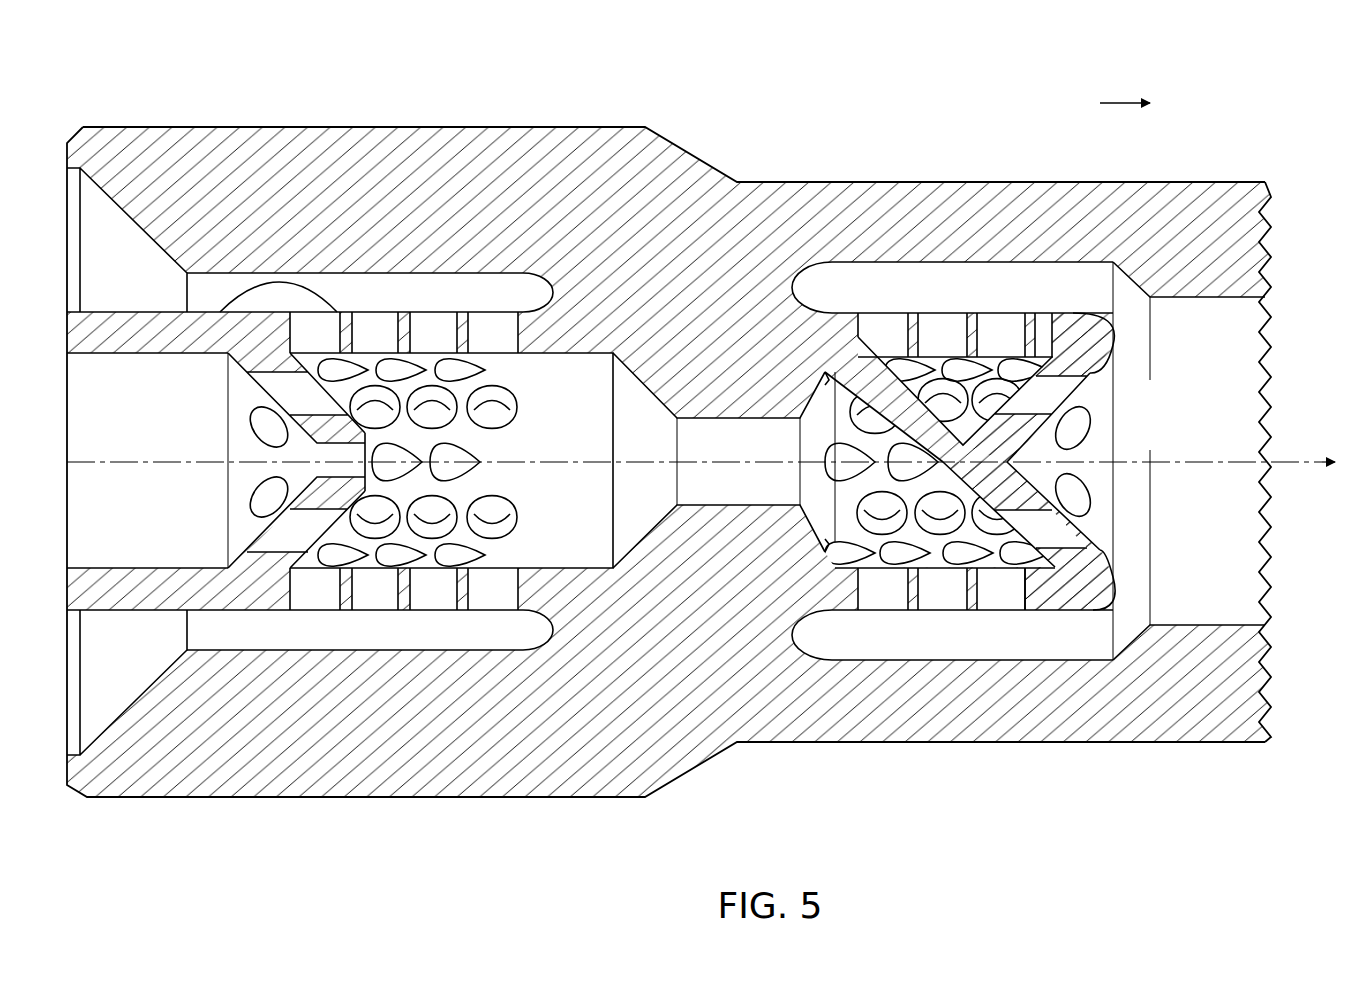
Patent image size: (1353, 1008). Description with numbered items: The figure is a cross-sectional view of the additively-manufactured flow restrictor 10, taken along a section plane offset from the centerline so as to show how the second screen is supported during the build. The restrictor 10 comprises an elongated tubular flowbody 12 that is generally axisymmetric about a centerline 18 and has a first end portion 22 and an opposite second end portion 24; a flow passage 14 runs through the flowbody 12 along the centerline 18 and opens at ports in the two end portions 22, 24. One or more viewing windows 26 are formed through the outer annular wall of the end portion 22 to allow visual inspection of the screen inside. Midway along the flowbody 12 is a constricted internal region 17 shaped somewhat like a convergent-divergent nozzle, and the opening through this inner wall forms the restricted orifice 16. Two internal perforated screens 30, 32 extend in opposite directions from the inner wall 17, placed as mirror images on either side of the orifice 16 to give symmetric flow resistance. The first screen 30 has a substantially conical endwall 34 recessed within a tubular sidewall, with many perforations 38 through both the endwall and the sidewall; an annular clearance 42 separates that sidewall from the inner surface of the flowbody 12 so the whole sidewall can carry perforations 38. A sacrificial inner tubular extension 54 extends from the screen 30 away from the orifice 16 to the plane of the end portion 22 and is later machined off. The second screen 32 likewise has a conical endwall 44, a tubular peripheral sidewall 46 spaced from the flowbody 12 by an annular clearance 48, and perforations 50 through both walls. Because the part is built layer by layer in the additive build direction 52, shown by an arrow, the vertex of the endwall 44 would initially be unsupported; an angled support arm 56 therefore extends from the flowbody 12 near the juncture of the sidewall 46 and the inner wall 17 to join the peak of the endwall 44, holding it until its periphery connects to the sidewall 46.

The additively-manufactured flow restrictor 10 is at (200, 85).
The flowbody 12 is at (1020, 745).
The flow passage 14 is at (1197, 604).
The restricted orifice 16 is at (730, 420).
The constricted internal region 17 is at (721, 546).
The centerline 18 is at (1290, 455).
The first end portion 22 is at (95, 130).
The second end portion 24 is at (1252, 181).
The viewing window 26 is at (283, 286).
The internal perforated screen 30 is at (395, 320).
The internal perforated screen 32 is at (945, 318).
The endwall 34 is at (234, 440).
The perforations 38 is at (340, 318).
The annular clearance 42 is at (189, 306).
The endwall 44 is at (1112, 462).
The peripheral sidewall 46 is at (1047, 608).
The annular clearance 48 is at (827, 306).
The perforations 50 is at (882, 320).
The additive build direction 52 is at (1122, 100).
The inner tubular extension 54 is at (128, 354).
The support arm 56 is at (902, 430).